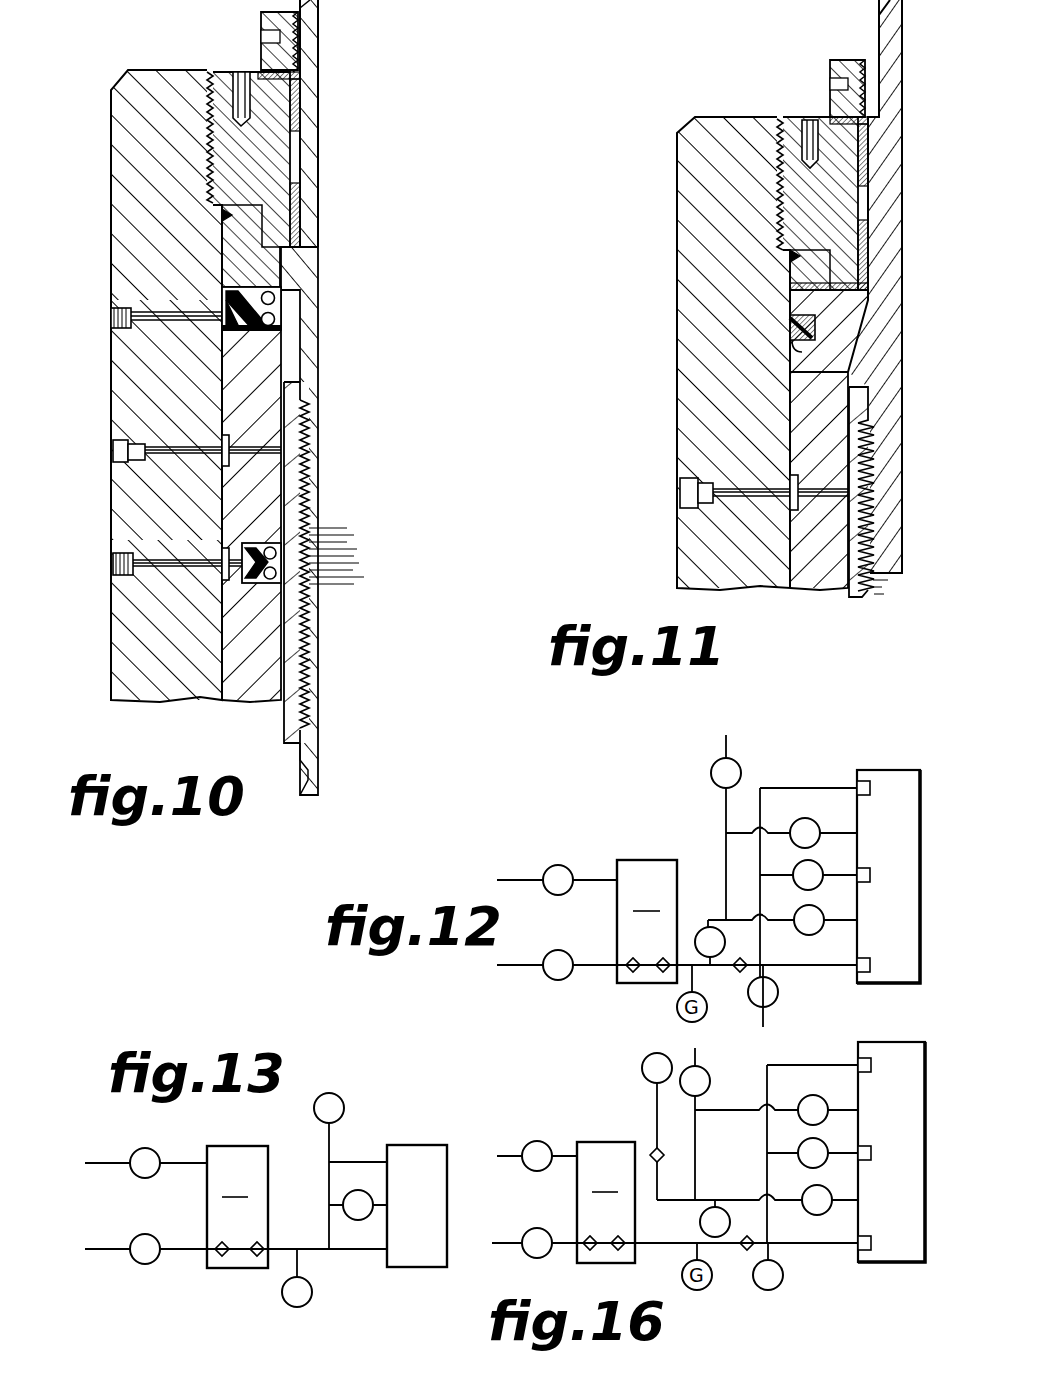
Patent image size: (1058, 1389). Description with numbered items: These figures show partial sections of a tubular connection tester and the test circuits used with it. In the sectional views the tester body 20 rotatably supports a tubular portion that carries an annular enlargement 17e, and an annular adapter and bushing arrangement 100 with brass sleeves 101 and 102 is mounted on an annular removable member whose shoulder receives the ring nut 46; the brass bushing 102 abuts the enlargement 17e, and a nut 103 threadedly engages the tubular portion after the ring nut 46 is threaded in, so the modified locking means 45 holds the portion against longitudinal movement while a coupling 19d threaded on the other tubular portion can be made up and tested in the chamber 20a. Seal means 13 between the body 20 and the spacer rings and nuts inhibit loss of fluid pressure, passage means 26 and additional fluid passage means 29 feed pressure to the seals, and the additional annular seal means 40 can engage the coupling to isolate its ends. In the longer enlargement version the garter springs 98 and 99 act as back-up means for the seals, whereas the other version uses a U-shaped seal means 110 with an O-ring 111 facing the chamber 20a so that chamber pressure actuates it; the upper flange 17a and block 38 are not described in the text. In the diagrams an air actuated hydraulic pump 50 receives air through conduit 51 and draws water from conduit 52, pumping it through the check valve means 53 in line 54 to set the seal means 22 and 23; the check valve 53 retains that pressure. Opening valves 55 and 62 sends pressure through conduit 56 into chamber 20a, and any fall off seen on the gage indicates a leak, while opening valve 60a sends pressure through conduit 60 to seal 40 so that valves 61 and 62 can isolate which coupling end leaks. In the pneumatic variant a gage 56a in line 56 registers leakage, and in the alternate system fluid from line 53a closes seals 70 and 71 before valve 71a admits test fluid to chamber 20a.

In FIG. 10, the seal means 13 is at (222, 215).
In FIG. 11, the seal means 13 is at (790, 257).
In FIG. 10, the housing flange 17a is at (318, 68).
In FIG. 10, the annular enlargement 17e is at (302, 312).
In FIG. 11, the annular enlargement 17e is at (880, 337).
In FIG. 10, the coupling 19d is at (303, 472).
In FIG. 11, the coupling 19d is at (868, 522).
In FIG. 10, the body 20 is at (108, 165).
In FIG. 11, the body 20 is at (670, 203).
In FIG. 12, the body 20 is at (922, 768).
In FIG. 16, the body 20 is at (923, 1036).
In FIG. 10, the chamber 20a is at (291, 355).
In FIG. 11, the chamber 20a is at (860, 402).
In FIG. 10, the passage means 26 is at (113, 449).
In FIG. 10, the additional fluid passage means 29 is at (150, 563).
In FIG. 10, the piston block 38 is at (268, 515).
In FIG. 11, the piston block 38 is at (805, 590).
In FIG. 10, the additional annular seal means 40 is at (245, 558).
In FIG. 12, the additional annular seal means 40 is at (870, 875).
In FIG. 16, the additional annular seal means 40 is at (871, 1150).
In FIG. 10, the locking means 45 is at (222, 68).
In FIG. 11, the locking means 45 is at (782, 112).
In FIG. 10, the ring nut 46 is at (214, 106).
In FIG. 11, the ring nut 46 is at (792, 163).
In FIG. 10, the garter spring 98 is at (272, 292).
In FIG. 10, the garter spring 99 is at (272, 322).
In FIG. 10, the annular adapter and bushing arrangement 100 is at (280, 158).
In FIG. 11, the annular adapter and bushing arrangement 100 is at (820, 203).
In FIG. 10, the brass sleeve 101 is at (300, 78).
In FIG. 11, the brass sleeve 101 is at (868, 155).
In FIG. 10, the brass bushing 102 is at (298, 205).
In FIG. 11, the brass bushing 102 is at (868, 272).
In FIG. 10, the nut 103 is at (300, 40).
In FIG. 11, the nut 103 is at (846, 65).
In FIG. 11, the seal means 110 is at (790, 326).
In FIG. 11, the O-ring 111 is at (796, 350).
In FIG. 12, the seal means 22 is at (870, 788).
In FIG. 16, the seal means 22 is at (871, 1065).
In FIG. 12, the seal means 23 is at (870, 965).
In FIG. 16, the seal means 23 is at (871, 1240).
In FIG. 12, the air actuated hydraulic pump 50 is at (647, 921).
In FIG. 13, the air actuated hydraulic pump 50 is at (237, 1207).
In FIG. 16, the air actuated hydraulic pump 50 is at (606, 1202).
In FIG. 12, the conduit 51 is at (585, 878).
In FIG. 13, the conduit 51 is at (178, 1160).
In FIG. 16, the conduit 51 is at (558, 1152).
In FIG. 12, the conduit 52 is at (587, 968).
In FIG. 13, the conduit 52 is at (180, 1252).
In FIG. 16, the conduit 52 is at (558, 1240).
In FIG. 12, the check valve means 53 is at (740, 975).
In FIG. 16, the check valve means 53 is at (745, 1250).
In FIG. 13, the line 53a is at (322, 1252).
In FIG. 12, the line 54 is at (808, 788).
In FIG. 16, the line 54 is at (798, 1066).
In FIG. 12, the valve 55 is at (702, 930).
In FIG. 12, the conduit 56 is at (726, 866).
In FIG. 16, the conduit 56 is at (695, 1142).
In FIG. 13, the gage 56a is at (298, 1308).
In FIG. 16, the gage 56a is at (700, 1221).
In FIG. 12, the conduit 60 is at (775, 877).
In FIG. 16, the conduit 60 is at (782, 1154).
In FIG. 12, the valve 60a is at (832, 863).
In FIG. 16, the valve 60a is at (832, 1140).
In FIG. 12, the valve 61 is at (815, 825).
In FIG. 16, the valve 61 is at (828, 1090).
In FIG. 12, the valve 62 is at (820, 912).
In FIG. 16, the valve 62 is at (805, 1186).
In FIG. 13, the seal 70 is at (385, 1148).
In FIG. 13, the seal 71 is at (382, 1240).
In FIG. 13, the valve 71a is at (340, 1195).